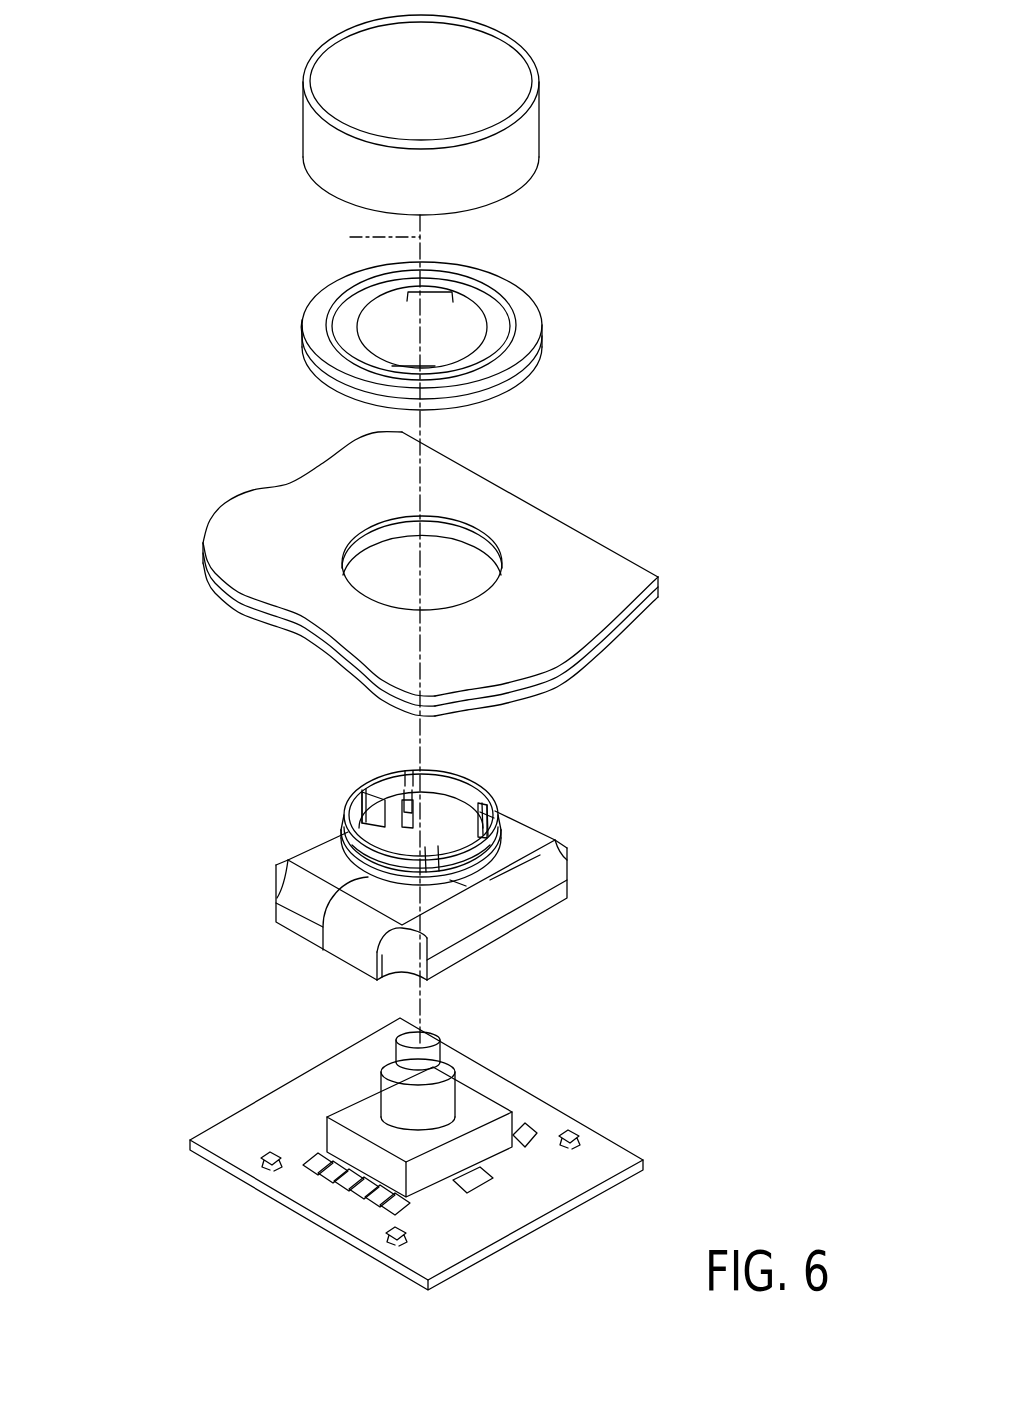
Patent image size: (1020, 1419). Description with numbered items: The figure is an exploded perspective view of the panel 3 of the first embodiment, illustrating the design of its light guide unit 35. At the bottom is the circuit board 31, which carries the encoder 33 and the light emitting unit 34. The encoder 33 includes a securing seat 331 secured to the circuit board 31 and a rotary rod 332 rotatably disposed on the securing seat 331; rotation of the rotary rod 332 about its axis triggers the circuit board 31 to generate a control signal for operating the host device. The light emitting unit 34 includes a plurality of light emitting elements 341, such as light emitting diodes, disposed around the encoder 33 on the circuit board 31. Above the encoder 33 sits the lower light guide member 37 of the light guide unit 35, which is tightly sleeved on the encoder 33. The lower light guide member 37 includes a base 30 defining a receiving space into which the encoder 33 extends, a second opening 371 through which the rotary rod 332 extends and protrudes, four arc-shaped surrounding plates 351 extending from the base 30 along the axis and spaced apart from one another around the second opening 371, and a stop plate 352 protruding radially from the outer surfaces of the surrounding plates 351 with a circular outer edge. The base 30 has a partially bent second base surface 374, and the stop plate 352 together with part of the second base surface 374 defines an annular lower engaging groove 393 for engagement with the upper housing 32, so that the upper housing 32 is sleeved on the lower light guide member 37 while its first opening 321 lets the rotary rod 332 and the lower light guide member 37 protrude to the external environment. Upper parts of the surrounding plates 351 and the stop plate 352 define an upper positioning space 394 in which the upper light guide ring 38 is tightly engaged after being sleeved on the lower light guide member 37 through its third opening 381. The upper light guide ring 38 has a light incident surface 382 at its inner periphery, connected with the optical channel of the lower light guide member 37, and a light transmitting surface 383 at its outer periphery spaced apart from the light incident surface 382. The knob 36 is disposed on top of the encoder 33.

The panel 3 is at (150, 145).
The base 30 is at (557, 897).
The circuit board 31 is at (633, 1167).
The upper housing 32 is at (602, 543).
The first opening 321 is at (460, 563).
The encoder 33 is at (564, 1046).
The securing seat 331 is at (490, 1133).
The rotary rod 332 is at (443, 1098).
The light emitting unit 34 is at (212, 1197).
The light emitting element 341 is at (268, 1165).
The light guide unit 35 is at (617, 204).
The surrounding plate 351 is at (453, 777).
The stop plate 352 is at (500, 837).
The knob 36 is at (485, 57).
The lower light guide member 37 is at (560, 792).
The second opening 371 is at (390, 800).
The second base surface 374 is at (533, 873).
The upper light guide ring 38 is at (497, 258).
The third opening 381 is at (457, 342).
The light incident surface 382 is at (397, 312).
The light transmitting surface 383 is at (302, 347).
The annular lower engaging groove 393 is at (458, 882).
The upper positioning space 394 is at (487, 820).